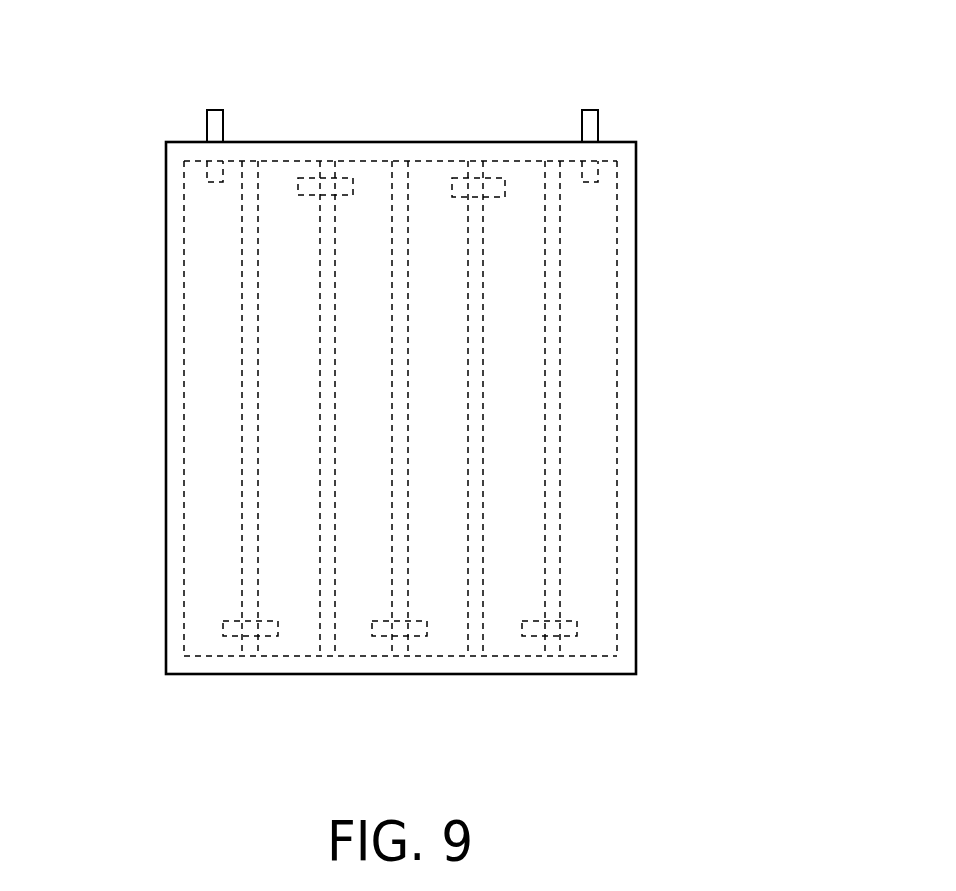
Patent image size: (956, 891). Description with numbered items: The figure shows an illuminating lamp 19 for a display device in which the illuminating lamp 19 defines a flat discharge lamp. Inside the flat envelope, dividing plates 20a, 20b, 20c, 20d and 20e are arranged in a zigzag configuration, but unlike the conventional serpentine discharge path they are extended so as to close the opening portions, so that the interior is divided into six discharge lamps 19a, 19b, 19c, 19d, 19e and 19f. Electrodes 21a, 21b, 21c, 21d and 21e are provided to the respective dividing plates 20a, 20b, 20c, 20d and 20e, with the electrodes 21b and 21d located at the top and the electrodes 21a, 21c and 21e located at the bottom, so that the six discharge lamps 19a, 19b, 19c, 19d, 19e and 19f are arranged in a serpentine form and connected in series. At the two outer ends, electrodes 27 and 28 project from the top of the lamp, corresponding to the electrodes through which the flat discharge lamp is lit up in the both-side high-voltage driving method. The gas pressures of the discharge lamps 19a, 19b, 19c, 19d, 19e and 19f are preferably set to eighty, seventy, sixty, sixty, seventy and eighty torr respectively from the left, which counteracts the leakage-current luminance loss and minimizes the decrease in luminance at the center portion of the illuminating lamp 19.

The illuminating lamp 19 is at (705, 248).
The discharge lamp 19a is at (210, 539).
The discharge lamp 19b is at (293, 580).
The discharge lamp 19c is at (372, 187).
The discharge lamp 19d is at (433, 183).
The discharge lamp 19e is at (507, 603).
The discharge lamp 19f is at (595, 505).
The dividing plate 20a is at (242, 325).
The dividing plate 20b is at (320, 385).
The dividing plate 20c is at (392, 455).
The dividing plate 20d is at (485, 318).
The dividing plate 20e is at (560, 388).
The electrode 21a is at (223, 640).
The electrode 21b is at (299, 172).
The electrode 21c is at (378, 640).
The electrode 21d is at (507, 170).
The electrode 21e is at (573, 640).
The electrode 27 is at (207, 172).
The electrode 28 is at (605, 163).